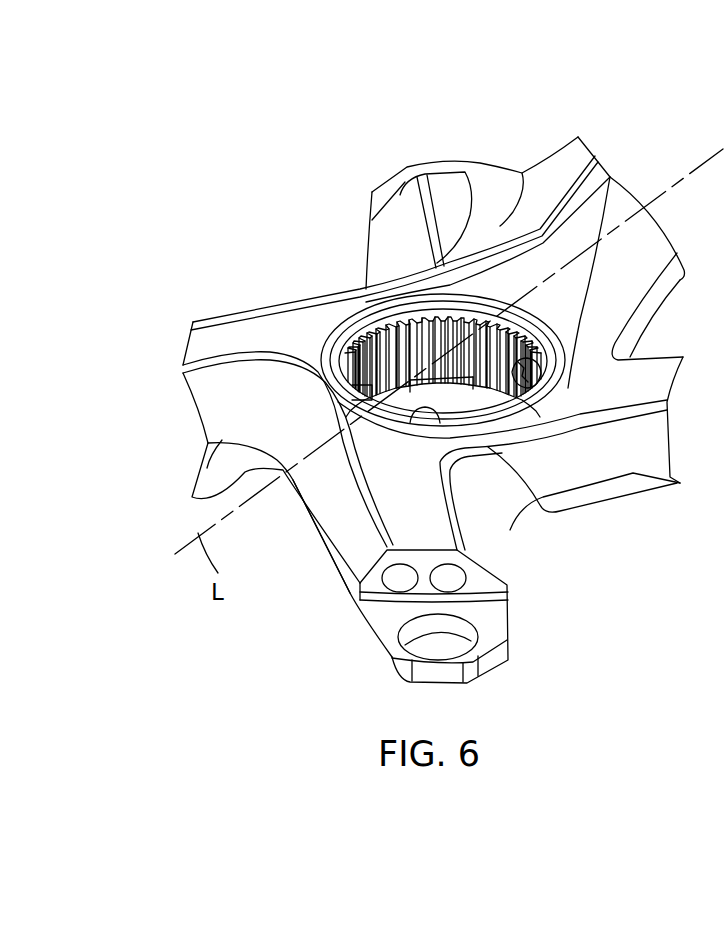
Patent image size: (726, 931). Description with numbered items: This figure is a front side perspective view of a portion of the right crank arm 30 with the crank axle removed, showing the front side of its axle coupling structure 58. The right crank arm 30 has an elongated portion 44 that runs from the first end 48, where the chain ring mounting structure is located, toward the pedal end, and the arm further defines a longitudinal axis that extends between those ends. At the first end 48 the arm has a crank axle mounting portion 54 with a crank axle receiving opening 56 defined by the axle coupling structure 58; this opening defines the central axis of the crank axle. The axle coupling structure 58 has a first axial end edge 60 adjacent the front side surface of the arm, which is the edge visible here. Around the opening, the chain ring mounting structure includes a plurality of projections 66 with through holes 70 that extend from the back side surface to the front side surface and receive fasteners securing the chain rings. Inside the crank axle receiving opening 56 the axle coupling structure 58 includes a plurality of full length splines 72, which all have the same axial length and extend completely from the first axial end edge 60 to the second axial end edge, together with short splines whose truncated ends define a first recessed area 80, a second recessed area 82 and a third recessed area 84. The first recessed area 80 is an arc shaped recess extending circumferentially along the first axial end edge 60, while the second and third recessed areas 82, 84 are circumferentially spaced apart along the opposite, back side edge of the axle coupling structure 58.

The right crank arm 30 is at (640, 240).
The elongated portion 44 is at (658, 282).
The first end 48 is at (288, 486).
The crank axle mounting portion 54 is at (488, 443).
The crank axle receiving opening 56 is at (522, 367).
The axle coupling structure 58 is at (418, 414).
The first axial end edge 60 is at (540, 297).
The projections 66 is at (401, 192).
The through holes 70 is at (438, 623).
The full length splines 72 is at (540, 337).
The first recessed area 80 is at (440, 313).
The second recessed area 82 is at (457, 380).
The third recessed area 84 is at (350, 417).